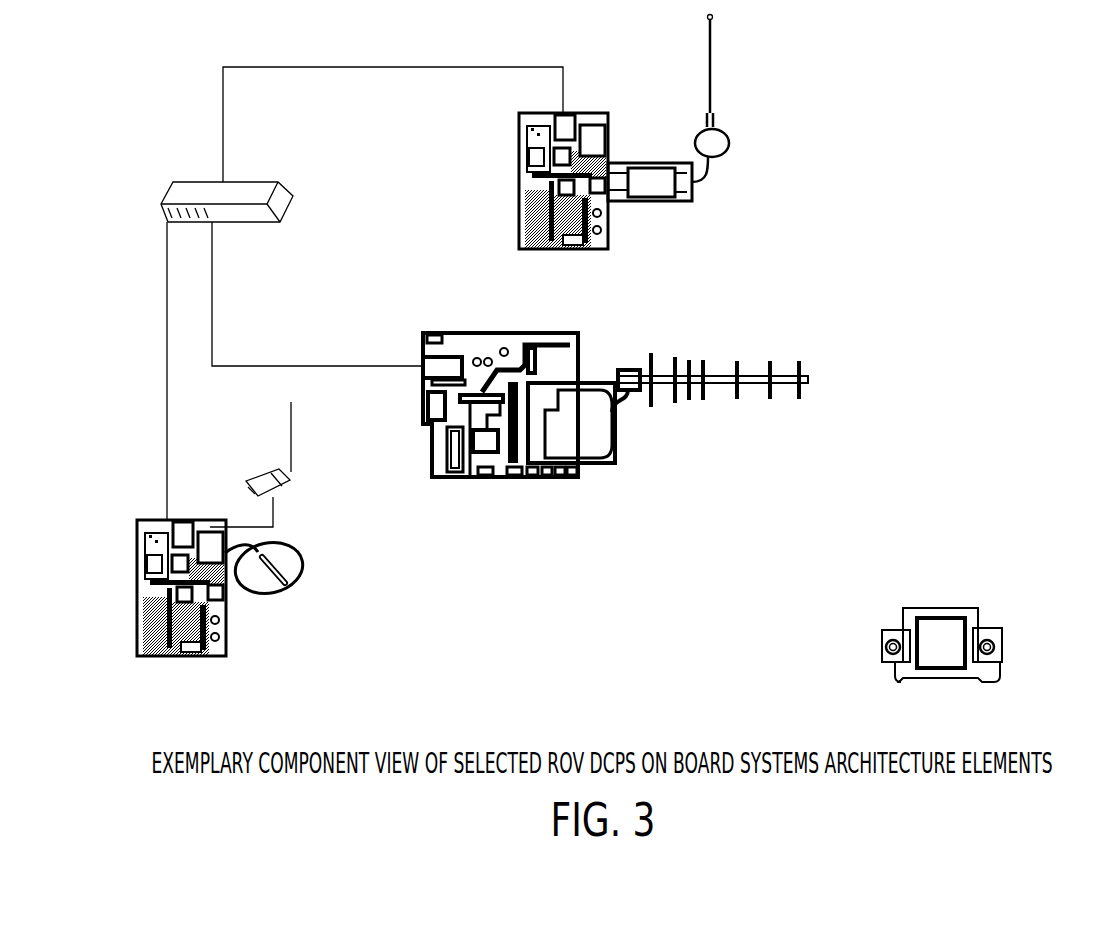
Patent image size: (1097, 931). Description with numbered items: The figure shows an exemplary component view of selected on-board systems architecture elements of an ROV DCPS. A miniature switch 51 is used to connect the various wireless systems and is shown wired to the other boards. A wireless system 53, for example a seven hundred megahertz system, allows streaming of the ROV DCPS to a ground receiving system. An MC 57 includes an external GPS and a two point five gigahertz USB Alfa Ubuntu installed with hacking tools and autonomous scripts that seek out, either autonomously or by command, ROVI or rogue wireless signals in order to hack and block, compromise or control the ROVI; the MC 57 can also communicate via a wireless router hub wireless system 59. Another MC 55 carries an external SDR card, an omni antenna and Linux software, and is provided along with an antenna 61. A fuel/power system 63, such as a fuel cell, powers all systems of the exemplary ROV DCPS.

The miniature switch 51 is at (268, 178).
The wireless system 53 is at (560, 362).
The MC 55 is at (667, 163).
The MC 57 is at (227, 628).
The wireless router hub wireless system 59 is at (293, 478).
The antenna 61 is at (713, 80).
The fuel/power system 63 is at (940, 608).